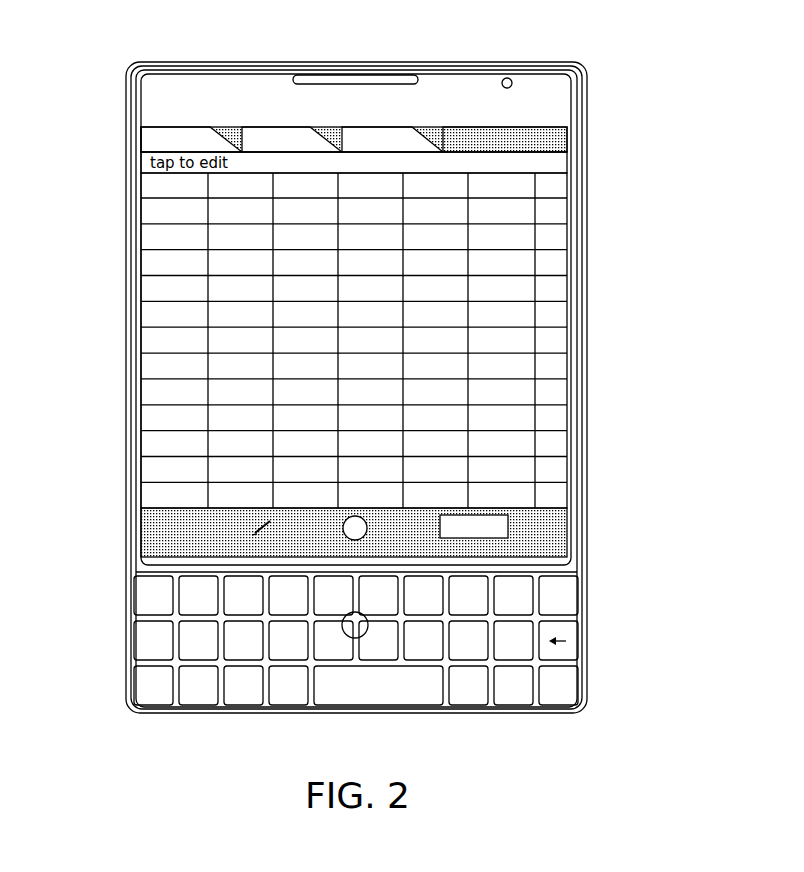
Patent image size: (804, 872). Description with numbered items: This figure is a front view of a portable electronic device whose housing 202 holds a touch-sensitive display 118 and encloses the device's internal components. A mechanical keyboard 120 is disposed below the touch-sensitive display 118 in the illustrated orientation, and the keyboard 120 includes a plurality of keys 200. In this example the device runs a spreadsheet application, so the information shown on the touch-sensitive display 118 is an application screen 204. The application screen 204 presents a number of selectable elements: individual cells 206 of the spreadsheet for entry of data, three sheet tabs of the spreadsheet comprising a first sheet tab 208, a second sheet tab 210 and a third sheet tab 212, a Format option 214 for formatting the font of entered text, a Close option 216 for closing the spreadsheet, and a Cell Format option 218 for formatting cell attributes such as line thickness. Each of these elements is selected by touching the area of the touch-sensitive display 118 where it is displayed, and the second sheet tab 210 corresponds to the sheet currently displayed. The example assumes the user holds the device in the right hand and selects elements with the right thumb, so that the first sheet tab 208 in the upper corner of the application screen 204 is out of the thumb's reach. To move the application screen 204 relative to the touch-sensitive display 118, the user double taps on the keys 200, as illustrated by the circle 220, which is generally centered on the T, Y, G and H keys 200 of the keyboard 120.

The housing 202 is at (567, 63).
The touch-sensitive display 118 is at (572, 322).
The application screen 204 is at (562, 138).
The Sheet 1 208 is at (145, 138).
The Sheet 2 210 is at (258, 138).
The Sheet 3 212 is at (370, 138).
The cells 206 is at (553, 453).
The Format option 214 is at (237, 550).
The Close option 216 is at (343, 527).
The Cell Format option 218 is at (502, 528).
The mechanical keyboard 120 is at (585, 569).
The keys 200 is at (567, 680).
The circle 220 is at (344, 632).